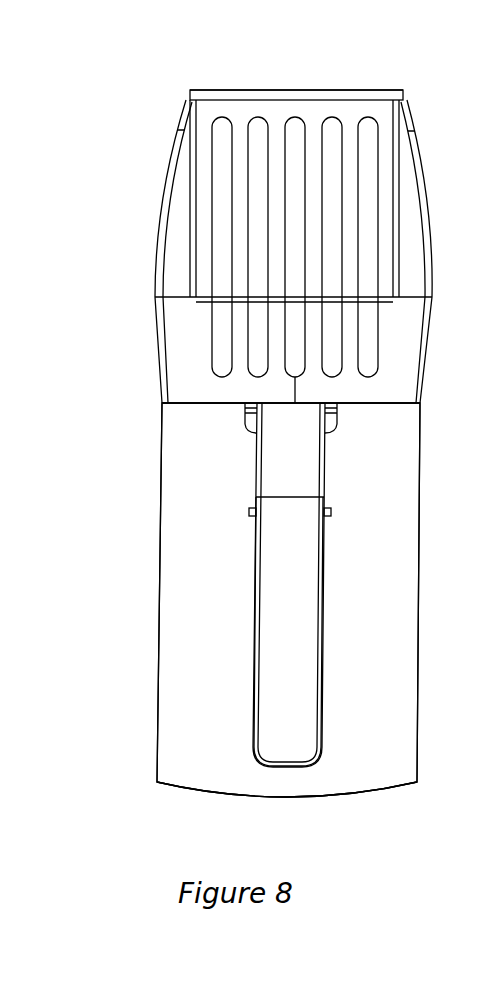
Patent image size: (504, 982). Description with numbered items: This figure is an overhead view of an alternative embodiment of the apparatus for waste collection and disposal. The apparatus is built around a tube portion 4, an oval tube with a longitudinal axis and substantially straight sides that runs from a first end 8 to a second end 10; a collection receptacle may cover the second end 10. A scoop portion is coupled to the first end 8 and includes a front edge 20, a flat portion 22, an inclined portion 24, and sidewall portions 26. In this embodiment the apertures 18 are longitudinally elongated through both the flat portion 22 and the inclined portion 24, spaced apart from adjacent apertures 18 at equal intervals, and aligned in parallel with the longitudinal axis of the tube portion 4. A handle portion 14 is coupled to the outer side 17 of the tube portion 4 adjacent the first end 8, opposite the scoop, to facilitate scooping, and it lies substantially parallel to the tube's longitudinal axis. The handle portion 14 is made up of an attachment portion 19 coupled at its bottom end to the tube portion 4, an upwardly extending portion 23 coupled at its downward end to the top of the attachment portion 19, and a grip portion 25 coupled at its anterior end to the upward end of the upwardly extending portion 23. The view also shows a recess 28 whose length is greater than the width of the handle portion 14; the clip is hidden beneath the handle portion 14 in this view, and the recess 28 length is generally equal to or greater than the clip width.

The tube portion 4 is at (118, 631).
The first end 8 is at (182, 412).
The second end 10 is at (163, 783).
The handle portion 14 is at (205, 570).
The outer side 17 is at (162, 682).
The apertures 18 is at (220, 127).
The attachment portion 19 is at (327, 415).
The front edge 20 is at (208, 89).
The flat portion 22 is at (380, 110).
The upwardly extending portion 23 is at (312, 468).
The inclined portion 24 is at (157, 327).
The grip portion 25 is at (305, 630).
The sidewall portions 26 is at (160, 228).
The recess 28 is at (330, 515).